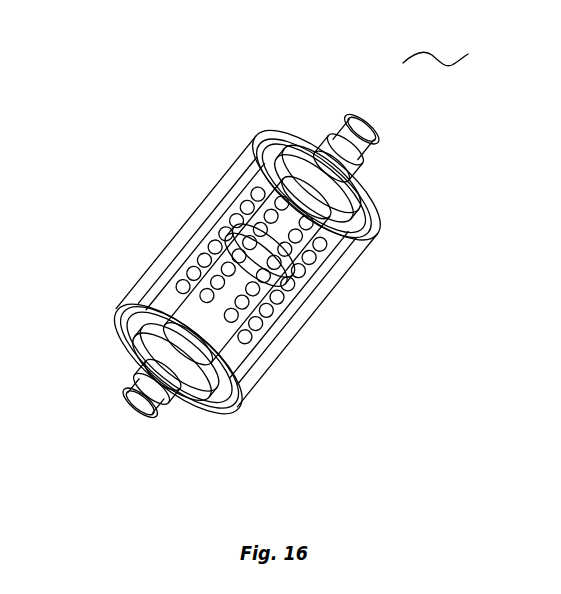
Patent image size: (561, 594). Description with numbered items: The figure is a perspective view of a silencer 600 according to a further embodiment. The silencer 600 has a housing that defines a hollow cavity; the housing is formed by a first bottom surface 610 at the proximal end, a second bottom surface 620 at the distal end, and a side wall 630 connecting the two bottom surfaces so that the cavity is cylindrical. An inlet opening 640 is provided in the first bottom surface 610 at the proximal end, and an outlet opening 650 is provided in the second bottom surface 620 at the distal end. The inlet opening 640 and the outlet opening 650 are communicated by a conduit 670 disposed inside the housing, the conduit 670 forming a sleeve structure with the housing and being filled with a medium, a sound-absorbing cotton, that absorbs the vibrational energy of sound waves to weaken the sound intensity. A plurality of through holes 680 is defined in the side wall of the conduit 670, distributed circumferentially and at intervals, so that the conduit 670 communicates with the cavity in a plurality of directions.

The silencer 600 is at (435, 42).
The first bottom surface 610 is at (204, 402).
The second bottom surface 620 is at (266, 132).
The side wall 630 is at (230, 165).
The inlet opening 640 is at (128, 400).
The outlet opening 650 is at (366, 124).
The conduit 670 is at (192, 263).
The through holes 680 is at (306, 280).